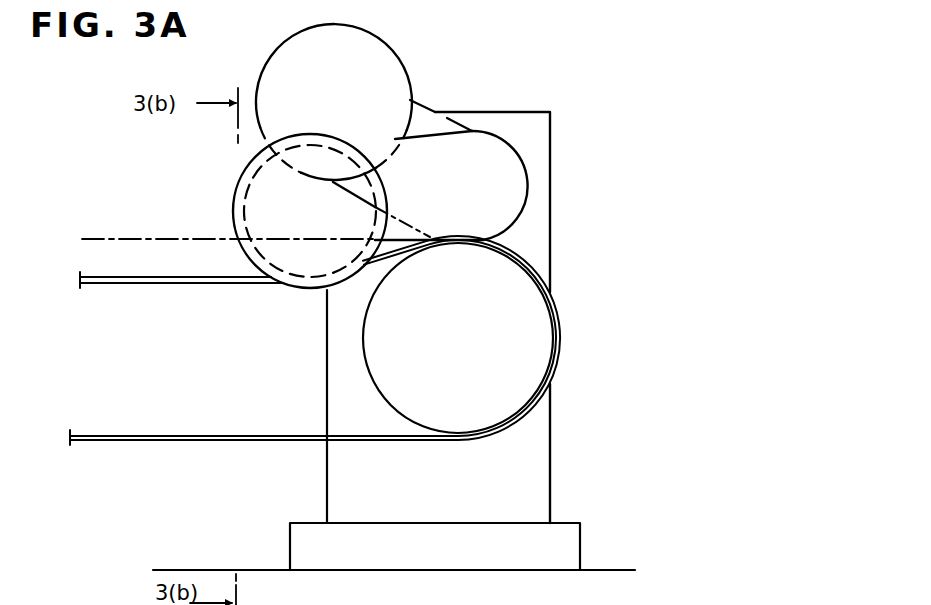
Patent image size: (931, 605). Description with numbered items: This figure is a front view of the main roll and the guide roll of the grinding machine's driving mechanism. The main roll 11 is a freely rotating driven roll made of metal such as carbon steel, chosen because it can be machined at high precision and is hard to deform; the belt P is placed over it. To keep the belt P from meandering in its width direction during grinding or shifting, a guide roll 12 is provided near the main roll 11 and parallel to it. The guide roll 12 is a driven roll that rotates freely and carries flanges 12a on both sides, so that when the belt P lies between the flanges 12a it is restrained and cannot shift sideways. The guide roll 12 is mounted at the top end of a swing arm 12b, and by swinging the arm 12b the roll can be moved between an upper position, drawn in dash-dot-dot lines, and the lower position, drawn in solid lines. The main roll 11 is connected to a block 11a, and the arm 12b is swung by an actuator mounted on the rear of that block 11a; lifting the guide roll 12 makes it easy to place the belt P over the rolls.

The main roll 11 is at (502, 360).
The block 11a is at (550, 205).
The guide roll 12 is at (273, 180).
The flanges 12a is at (234, 203).
The swing arm 12b is at (412, 147).
The belt P is at (127, 441).